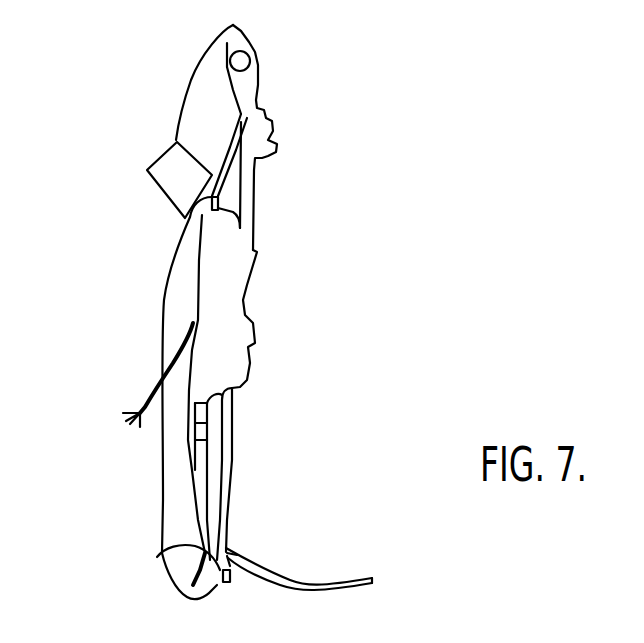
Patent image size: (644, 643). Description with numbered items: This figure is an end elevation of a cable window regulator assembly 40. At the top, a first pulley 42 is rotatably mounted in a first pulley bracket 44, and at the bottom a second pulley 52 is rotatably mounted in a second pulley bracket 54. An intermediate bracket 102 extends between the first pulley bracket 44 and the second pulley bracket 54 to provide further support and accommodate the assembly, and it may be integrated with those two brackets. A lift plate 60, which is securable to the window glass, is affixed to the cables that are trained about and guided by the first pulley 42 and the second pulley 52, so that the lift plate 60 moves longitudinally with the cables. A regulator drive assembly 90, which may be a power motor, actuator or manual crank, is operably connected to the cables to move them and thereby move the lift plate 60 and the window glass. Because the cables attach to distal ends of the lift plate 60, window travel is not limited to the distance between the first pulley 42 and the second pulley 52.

The lift plate 60 is at (150, 148).
The first pulley 42 is at (250, 44).
The first pulley bracket 44 is at (258, 70).
The cable window regulator assembly 40 is at (274, 483).
The intermediate bracket 102 is at (222, 460).
The regulator drive assembly 90 is at (193, 323).
The second pulley bracket 54 is at (157, 557).
The second pulley 52 is at (228, 550).